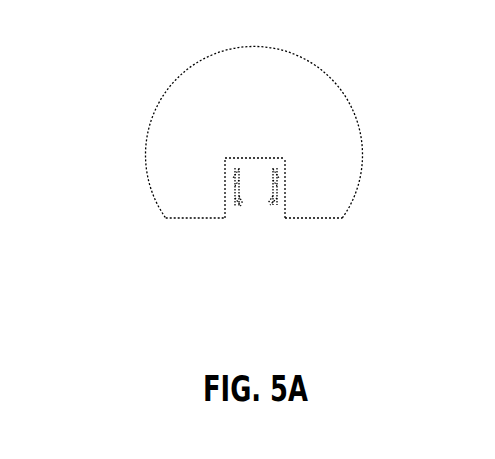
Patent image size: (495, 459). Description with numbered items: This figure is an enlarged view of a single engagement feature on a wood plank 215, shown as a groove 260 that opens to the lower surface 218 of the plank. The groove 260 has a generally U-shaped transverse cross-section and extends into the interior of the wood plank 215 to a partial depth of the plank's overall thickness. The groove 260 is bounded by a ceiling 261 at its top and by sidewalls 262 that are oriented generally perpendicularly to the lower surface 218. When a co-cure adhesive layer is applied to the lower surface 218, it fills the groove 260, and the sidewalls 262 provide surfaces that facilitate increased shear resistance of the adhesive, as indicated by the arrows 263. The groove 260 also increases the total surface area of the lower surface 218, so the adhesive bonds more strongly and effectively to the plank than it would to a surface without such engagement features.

The wood plank 215 is at (333, 117).
The lower surface 218 is at (332, 228).
The groove 260 is at (253, 235).
The ceiling 261 is at (252, 158).
The sidewalls 262 is at (224, 190).
The arrows 263 is at (221, 210).